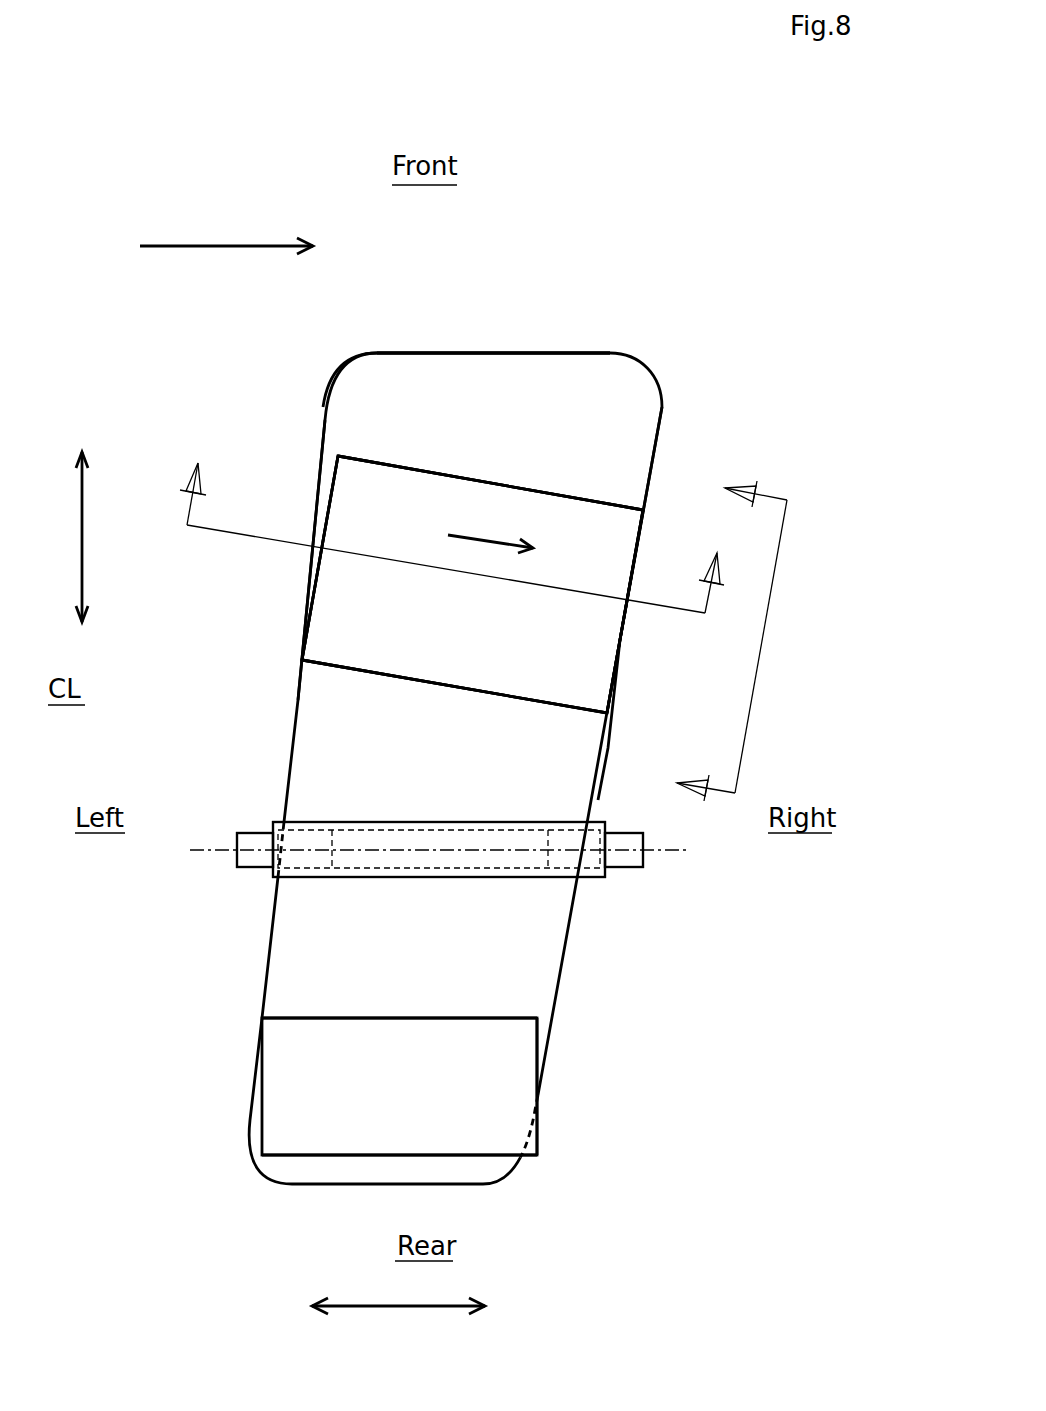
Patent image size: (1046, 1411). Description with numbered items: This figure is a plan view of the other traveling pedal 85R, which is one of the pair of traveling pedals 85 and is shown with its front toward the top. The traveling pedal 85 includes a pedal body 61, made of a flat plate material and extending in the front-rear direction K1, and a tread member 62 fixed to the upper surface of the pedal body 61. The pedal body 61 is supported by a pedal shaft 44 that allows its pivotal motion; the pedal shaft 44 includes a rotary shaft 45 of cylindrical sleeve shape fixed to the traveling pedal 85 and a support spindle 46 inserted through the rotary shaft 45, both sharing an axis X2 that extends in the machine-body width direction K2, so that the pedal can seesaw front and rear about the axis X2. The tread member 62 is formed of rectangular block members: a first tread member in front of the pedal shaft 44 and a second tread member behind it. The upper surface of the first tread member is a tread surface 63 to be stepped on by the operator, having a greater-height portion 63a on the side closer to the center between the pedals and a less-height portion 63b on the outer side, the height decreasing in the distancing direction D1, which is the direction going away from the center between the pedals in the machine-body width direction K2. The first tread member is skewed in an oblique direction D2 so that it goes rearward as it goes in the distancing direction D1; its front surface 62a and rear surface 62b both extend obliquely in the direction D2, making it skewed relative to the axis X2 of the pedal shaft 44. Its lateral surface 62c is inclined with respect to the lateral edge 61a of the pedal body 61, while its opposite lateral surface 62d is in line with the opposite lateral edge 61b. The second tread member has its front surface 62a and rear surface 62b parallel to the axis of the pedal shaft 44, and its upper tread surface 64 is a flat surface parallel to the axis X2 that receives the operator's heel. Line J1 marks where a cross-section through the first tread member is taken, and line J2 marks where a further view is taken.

The traveling pedal 85 is at (503, 335).
The other traveling pedal 85R is at (557, 333).
The pedal body 61 is at (619, 390).
The lateral edge 61a is at (323, 407).
The opposite lateral edge 61b is at (608, 748).
The tread member 62 is at (597, 495).
The front surface 62a is at (462, 482).
The rear surface 62b is at (472, 690).
The lateral surface 62c is at (338, 463).
The opposite lateral surface 62d is at (640, 537).
The tread surface 63 is at (407, 502).
The greater-height portion 63a is at (335, 596).
The less-height portion 63b is at (597, 663).
The tread surface 64 is at (518, 1080).
The pedal shaft 44 is at (358, 818).
The rotary shaft 45 is at (397, 878).
The support spindle 46 is at (255, 870).
The axis X2 is at (630, 855).
The distancing direction D1 is at (207, 244).
The oblique direction D2 is at (488, 532).
The front-rear direction K1 is at (78, 537).
The machine-body width direction K2 is at (425, 1305).
The line J1- J1 is at (442, 547).
The line J2- J2 is at (733, 646).